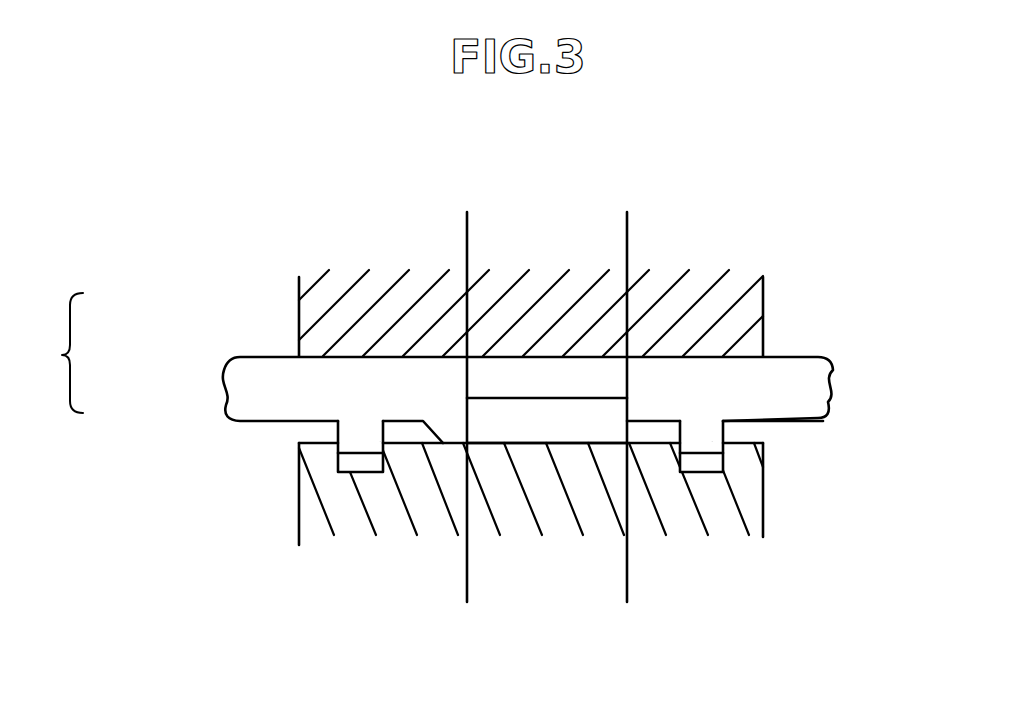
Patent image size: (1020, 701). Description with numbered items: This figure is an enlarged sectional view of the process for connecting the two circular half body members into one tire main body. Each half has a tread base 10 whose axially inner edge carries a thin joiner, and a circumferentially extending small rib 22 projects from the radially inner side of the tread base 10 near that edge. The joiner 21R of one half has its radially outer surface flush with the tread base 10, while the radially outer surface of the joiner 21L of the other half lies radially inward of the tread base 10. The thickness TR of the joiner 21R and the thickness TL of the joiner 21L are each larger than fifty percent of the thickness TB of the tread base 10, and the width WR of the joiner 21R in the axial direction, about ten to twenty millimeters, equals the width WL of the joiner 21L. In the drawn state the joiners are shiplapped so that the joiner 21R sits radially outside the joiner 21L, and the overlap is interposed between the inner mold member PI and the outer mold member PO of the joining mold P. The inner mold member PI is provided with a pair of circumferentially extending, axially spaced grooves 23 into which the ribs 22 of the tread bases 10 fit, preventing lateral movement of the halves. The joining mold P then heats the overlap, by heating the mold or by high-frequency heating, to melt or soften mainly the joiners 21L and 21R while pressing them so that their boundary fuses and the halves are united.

The tread base 10 is at (250, 413).
The joiner 21R is at (497, 370).
The joiner 21L is at (585, 432).
The rib 22 is at (385, 455).
The groove 23 is at (353, 463).
The joining mold P is at (64, 353).
The outer mold member PO is at (312, 312).
The inner mold member PI is at (320, 532).
The thickness of the tread base TB is at (282, 359).
The thickness of the joiner 21R TR is at (543, 359).
The thickness of the joiner 21L TL is at (543, 400).
The width of the joiner 21R WR is at (625, 227).
The width of the joiner 21L WL is at (625, 578).